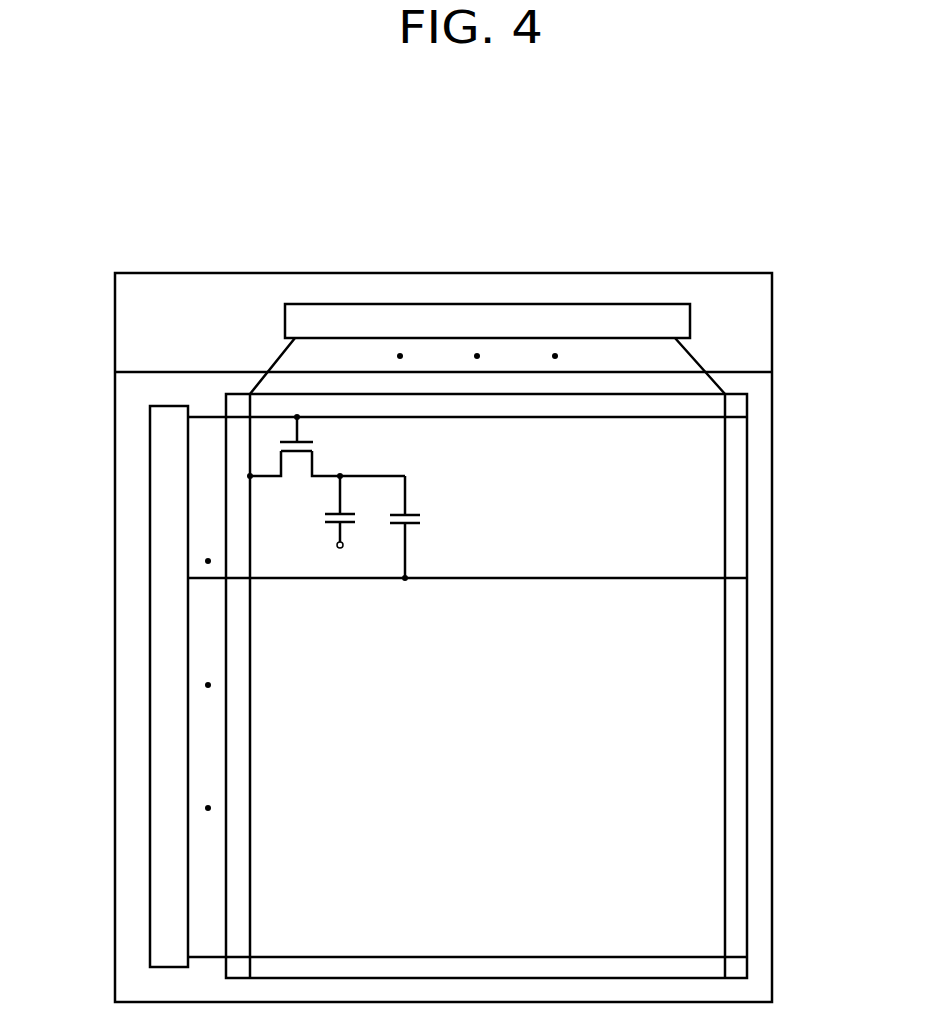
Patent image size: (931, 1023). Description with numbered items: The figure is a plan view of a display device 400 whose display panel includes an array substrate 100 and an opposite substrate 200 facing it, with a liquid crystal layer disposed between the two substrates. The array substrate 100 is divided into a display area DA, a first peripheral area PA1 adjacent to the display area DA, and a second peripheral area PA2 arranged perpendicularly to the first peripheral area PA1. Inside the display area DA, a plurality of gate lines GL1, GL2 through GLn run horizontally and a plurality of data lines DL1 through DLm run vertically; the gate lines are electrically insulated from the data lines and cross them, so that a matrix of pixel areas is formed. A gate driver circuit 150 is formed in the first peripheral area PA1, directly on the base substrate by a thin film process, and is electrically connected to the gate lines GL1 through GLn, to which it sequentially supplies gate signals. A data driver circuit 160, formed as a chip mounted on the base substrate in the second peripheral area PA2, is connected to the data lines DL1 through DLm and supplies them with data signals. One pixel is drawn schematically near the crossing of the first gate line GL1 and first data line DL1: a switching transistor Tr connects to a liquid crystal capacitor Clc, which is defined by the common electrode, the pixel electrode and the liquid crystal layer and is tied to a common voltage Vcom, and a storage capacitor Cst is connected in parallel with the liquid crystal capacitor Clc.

The display device 400 is at (470, 157).
The opposite substrate 200 is at (740, 273).
The array substrate 100 is at (740, 372).
The second peripheral area PA2 is at (752, 304).
The first peripheral area PA1 is at (128, 628).
The data driver circuit 160 is at (487, 303).
The gate driver circuit 150 is at (150, 530).
The display area DA is at (680, 610).
The first gate line GL1 is at (520, 419).
The second gate line GL2 is at (520, 580).
The n-th gate line GLn is at (520, 955).
The first data line DL1 is at (251, 665).
The m-th data line DLm is at (725, 665).
The thin film transistor Tr is at (320, 447).
The liquid crystal capacitor Clc is at (317, 512).
The storage capacitor Cst is at (427, 528).
The common voltage Vcom is at (339, 564).